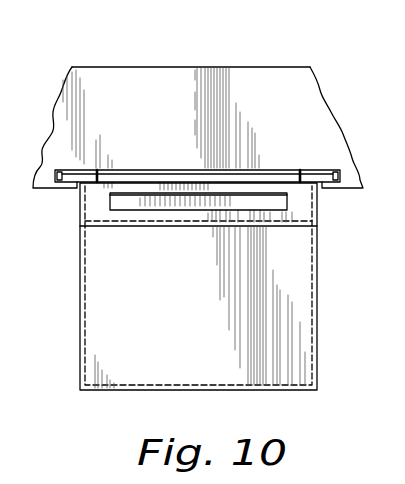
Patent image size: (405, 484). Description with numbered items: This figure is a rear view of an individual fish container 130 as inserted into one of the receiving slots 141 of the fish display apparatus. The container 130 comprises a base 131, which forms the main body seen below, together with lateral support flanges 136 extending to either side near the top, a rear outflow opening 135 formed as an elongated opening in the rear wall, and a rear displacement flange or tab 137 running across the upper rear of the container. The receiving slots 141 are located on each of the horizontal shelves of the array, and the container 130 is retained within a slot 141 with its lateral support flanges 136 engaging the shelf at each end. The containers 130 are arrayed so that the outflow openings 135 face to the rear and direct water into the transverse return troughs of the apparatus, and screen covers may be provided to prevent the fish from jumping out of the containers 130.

The individual fish container 130 is at (210, 249).
The base 131 is at (292, 277).
The rear outflow opening 135 is at (255, 202).
The lateral support flanges 136 is at (73, 176).
The rear displacement flange or tab 137 is at (180, 181).
The receiving slots 141 is at (43, 177).